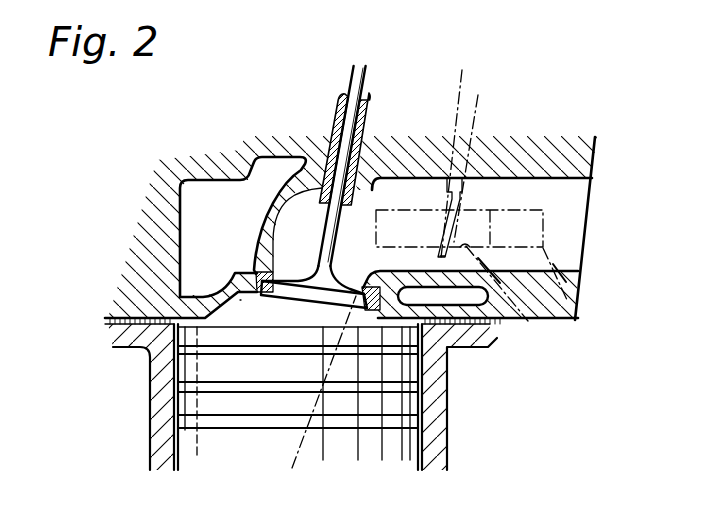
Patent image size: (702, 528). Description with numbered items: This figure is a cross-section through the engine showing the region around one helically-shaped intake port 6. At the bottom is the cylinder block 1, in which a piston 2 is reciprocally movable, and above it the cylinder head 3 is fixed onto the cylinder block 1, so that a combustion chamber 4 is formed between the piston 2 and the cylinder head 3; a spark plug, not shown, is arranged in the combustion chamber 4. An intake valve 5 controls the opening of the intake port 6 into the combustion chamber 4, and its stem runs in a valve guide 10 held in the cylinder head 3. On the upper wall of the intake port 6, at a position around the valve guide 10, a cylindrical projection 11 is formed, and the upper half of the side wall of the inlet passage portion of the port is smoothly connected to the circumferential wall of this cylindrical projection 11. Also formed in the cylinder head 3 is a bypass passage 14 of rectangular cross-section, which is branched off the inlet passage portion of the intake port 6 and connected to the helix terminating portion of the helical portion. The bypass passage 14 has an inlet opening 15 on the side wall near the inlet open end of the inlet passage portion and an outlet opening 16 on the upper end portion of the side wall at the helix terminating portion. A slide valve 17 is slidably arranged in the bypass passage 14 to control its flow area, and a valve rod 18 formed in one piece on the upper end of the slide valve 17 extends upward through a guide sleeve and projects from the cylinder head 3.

The cylinder block 1 is at (152, 413).
The piston 2 is at (206, 440).
The cylinder head 3 is at (157, 242).
The combustion chamber 4 is at (254, 320).
The intake valve 5 is at (322, 232).
The helically-shaped intake port 6 is at (500, 190).
The valve guide 10 is at (368, 103).
The cylindrical projection 11 is at (364, 189).
The bypass passage 14 is at (527, 320).
The inlet opening 15 is at (567, 298).
The outlet opening 16 is at (318, 397).
The slide valve 17 is at (447, 233).
The valve rod 18 is at (460, 116).